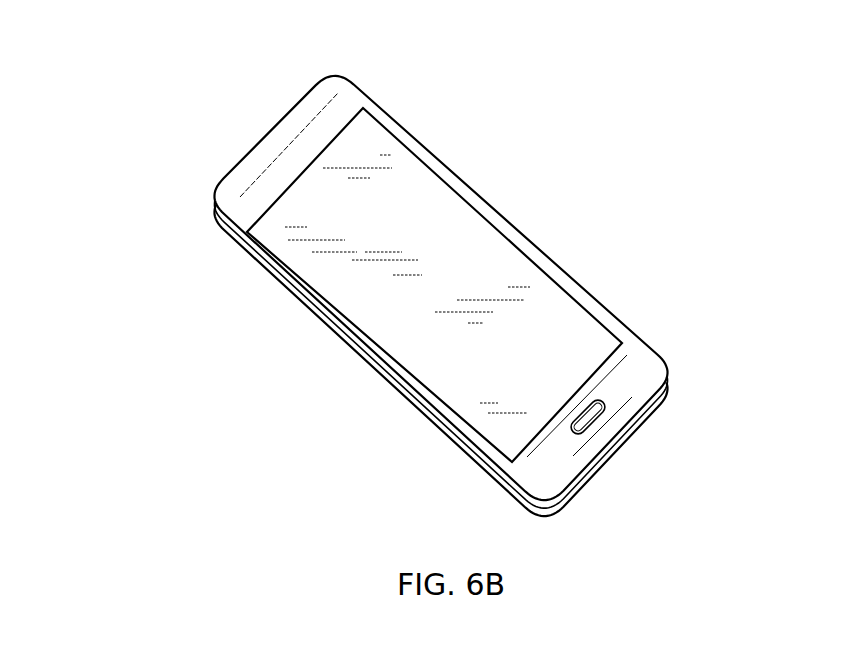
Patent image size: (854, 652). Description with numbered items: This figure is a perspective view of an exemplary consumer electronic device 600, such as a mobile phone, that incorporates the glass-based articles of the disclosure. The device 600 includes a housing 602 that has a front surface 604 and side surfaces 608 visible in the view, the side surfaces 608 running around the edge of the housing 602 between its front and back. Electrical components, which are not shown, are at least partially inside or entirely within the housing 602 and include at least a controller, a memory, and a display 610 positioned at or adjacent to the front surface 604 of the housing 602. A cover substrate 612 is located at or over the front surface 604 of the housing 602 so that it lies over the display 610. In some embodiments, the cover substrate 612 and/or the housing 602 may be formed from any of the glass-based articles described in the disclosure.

The consumer electronic device 600 is at (243, 103).
The housing 602 is at (352, 97).
The front surface 604 is at (638, 372).
The side surfaces 608 is at (290, 290).
The display 610 is at (408, 173).
The cover substrate 612 is at (463, 375).